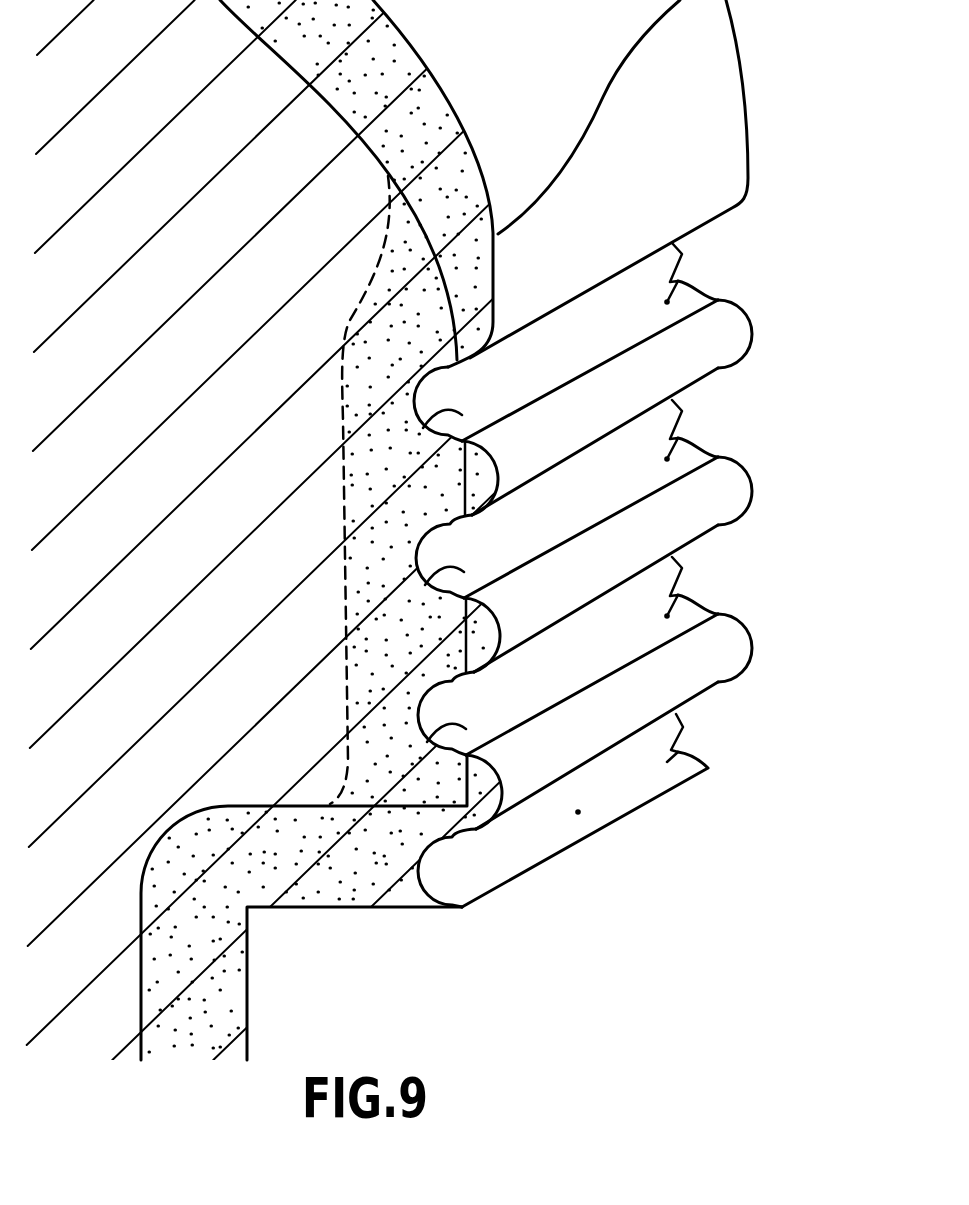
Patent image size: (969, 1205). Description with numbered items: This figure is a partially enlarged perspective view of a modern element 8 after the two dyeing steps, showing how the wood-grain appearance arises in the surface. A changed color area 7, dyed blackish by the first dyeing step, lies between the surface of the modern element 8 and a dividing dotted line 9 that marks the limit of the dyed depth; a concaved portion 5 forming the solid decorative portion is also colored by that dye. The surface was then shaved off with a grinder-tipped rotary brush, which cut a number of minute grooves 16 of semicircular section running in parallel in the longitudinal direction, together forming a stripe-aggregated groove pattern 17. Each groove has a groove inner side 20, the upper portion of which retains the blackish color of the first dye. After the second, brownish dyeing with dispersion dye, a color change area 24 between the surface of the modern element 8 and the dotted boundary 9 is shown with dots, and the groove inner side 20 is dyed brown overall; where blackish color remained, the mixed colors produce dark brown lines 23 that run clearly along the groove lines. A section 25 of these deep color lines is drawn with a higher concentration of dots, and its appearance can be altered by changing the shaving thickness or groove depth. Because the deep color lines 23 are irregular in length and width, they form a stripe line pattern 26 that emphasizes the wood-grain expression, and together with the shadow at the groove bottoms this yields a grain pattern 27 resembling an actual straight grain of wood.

The concaved portion 5 is at (298, 995).
The changed color area 7 is at (467, 297).
The modern element 8 is at (478, 155).
The dividing dotted line 9 is at (340, 372).
The minute grooves 16 is at (578, 812).
The stripe-aggregated groove pattern 17 is at (742, 730).
The groove inner side 20 is at (445, 713).
The dark brown lines 23 is at (805, 632).
The color change area 24 is at (363, 403).
The section of the deep color lines 25 is at (463, 645).
The stripe line pattern 26 is at (618, 765).
The grain pattern 27 is at (578, 870).